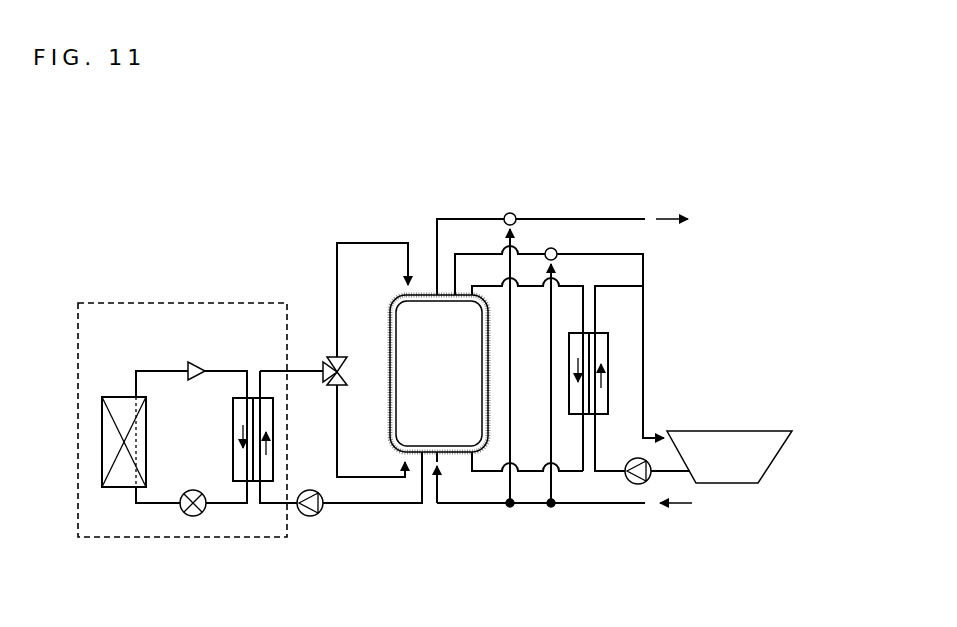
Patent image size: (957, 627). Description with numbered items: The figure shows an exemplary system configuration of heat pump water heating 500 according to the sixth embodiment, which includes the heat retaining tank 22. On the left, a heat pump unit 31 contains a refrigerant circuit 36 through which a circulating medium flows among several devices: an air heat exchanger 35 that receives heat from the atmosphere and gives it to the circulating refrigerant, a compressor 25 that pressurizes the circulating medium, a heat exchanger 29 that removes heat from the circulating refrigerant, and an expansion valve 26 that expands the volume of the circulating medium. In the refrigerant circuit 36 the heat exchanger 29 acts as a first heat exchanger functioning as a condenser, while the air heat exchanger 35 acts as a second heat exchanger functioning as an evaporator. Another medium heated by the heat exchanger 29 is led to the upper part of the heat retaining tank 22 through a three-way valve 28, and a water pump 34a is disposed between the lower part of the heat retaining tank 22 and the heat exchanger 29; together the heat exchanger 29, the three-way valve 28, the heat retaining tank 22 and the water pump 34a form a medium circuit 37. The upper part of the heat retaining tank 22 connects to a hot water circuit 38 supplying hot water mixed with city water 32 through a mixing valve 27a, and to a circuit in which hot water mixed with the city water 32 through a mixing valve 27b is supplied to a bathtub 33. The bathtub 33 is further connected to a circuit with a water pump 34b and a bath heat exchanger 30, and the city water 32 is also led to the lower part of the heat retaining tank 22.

The heat pump water heating 500 is at (148, 148).
The heat pump unit 31 is at (211, 303).
The heat retaining tank 22 is at (390, 333).
The compressor 25 is at (203, 364).
The expansion valve 26 is at (193, 516).
The mixing valve 27a is at (510, 212).
The mixing valve 27b is at (551, 248).
The three-way valve 28 is at (334, 382).
The heat exchanger 29 is at (233, 433).
The bath heat exchanger 30 is at (608, 350).
The city water 32 is at (678, 504).
The bathtub 33 is at (728, 484).
The water pump 34a is at (308, 516).
The water pump 34b is at (632, 486).
The air heat exchanger 35 is at (100, 470).
The refrigerant circuit 36 is at (148, 371).
The medium circuit 37 is at (364, 243).
The hot water circuit 38 is at (665, 218).